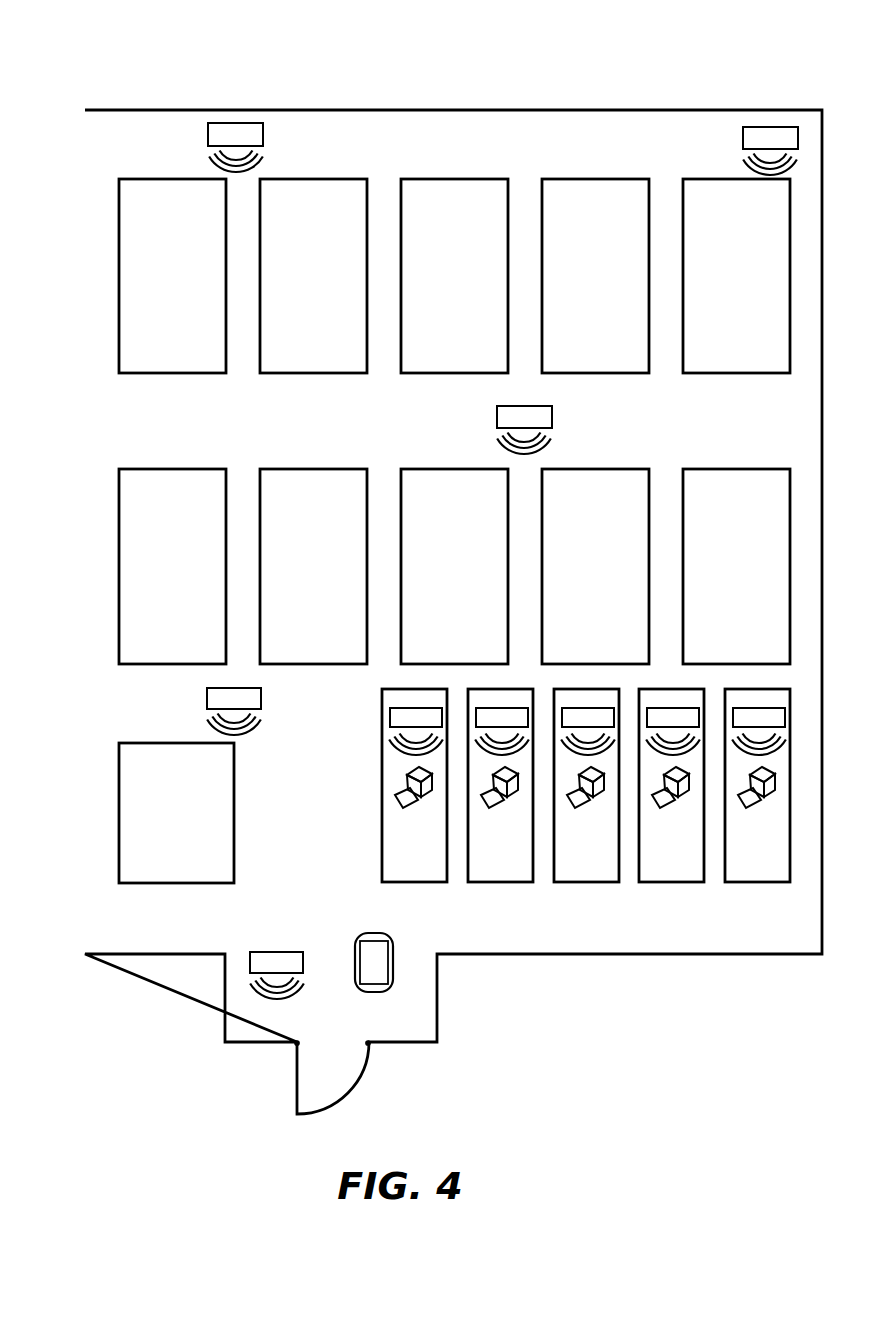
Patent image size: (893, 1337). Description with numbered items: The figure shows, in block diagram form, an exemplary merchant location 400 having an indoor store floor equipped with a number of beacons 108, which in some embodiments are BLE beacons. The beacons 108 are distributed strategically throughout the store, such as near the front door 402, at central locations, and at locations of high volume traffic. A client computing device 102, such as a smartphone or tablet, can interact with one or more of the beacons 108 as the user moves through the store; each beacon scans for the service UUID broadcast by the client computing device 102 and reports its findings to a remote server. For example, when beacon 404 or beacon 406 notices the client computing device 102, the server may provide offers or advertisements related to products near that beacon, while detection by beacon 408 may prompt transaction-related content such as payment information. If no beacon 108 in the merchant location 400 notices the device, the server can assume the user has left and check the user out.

The merchant location 400 is at (121, 90).
The client computing device 102 is at (375, 992).
The beacons 108 is at (496, 580).
The front door 402 is at (338, 1102).
The beacon 404 is at (524, 563).
The beacon 406 is at (235, 147).
The beacon 408 is at (416, 731).